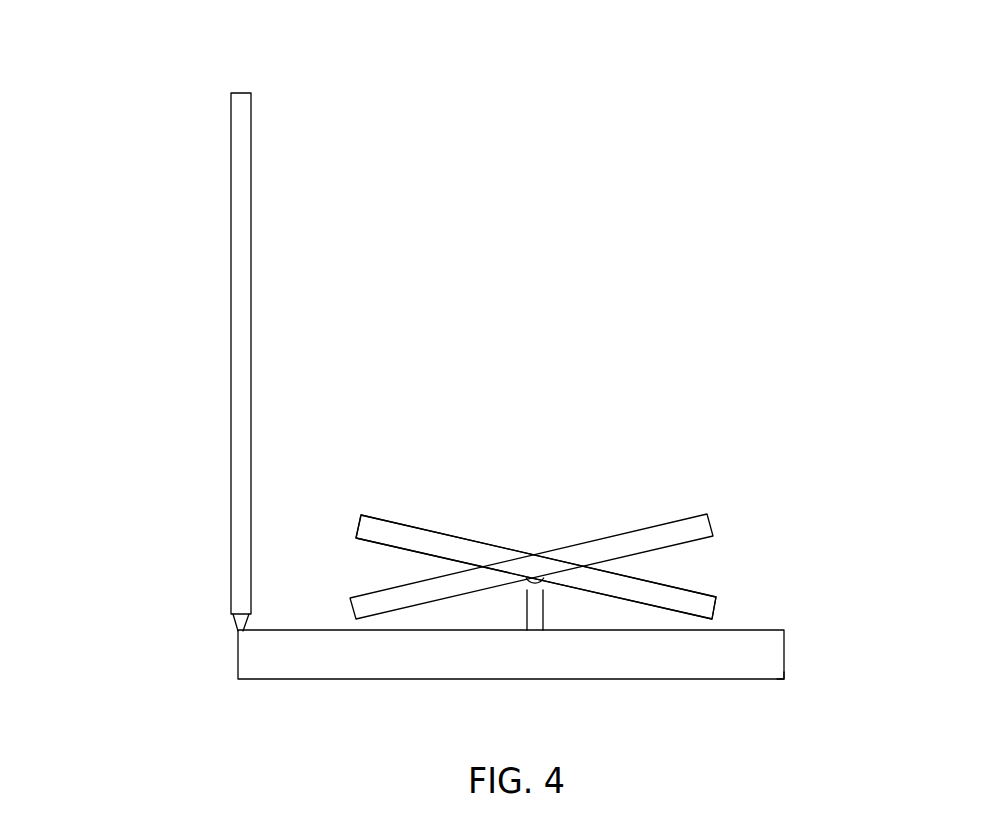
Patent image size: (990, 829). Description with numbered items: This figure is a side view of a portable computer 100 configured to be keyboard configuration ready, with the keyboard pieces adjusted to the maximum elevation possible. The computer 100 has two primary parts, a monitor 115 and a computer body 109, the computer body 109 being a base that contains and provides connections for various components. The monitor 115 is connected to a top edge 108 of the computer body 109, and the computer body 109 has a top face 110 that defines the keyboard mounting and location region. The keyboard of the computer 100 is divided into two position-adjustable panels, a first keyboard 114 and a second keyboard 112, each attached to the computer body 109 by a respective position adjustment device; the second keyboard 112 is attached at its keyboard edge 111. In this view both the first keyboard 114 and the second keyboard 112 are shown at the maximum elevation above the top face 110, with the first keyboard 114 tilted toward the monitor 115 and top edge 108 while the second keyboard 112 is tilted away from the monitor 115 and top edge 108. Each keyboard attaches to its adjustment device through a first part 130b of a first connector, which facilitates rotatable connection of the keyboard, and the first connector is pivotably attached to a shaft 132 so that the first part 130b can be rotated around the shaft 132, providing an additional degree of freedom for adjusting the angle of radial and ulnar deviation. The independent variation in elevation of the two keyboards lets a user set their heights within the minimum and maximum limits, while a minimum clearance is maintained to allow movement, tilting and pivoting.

The computer 100 is at (768, 169).
The monitor 115 is at (240, 113).
The top edge 108 is at (238, 631).
The top face 110 is at (763, 630).
The computer body 109 is at (795, 686).
The second keyboard 112 is at (381, 528).
The keyboard edge 111 is at (536, 567).
The first keyboard 114 is at (690, 530).
The first part of first connector 130b is at (530, 585).
The shaft 132 is at (537, 612).